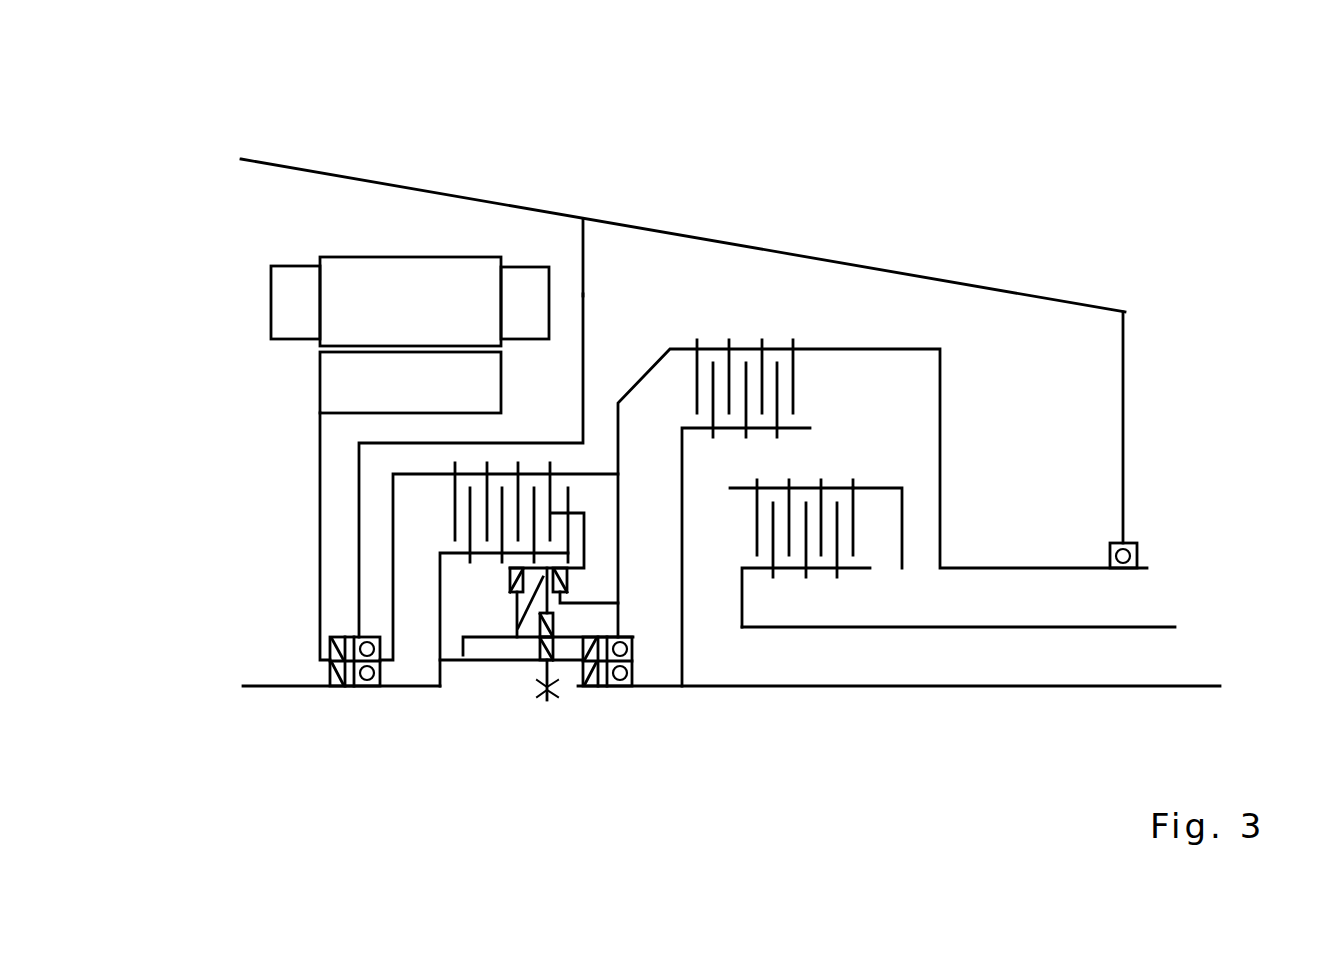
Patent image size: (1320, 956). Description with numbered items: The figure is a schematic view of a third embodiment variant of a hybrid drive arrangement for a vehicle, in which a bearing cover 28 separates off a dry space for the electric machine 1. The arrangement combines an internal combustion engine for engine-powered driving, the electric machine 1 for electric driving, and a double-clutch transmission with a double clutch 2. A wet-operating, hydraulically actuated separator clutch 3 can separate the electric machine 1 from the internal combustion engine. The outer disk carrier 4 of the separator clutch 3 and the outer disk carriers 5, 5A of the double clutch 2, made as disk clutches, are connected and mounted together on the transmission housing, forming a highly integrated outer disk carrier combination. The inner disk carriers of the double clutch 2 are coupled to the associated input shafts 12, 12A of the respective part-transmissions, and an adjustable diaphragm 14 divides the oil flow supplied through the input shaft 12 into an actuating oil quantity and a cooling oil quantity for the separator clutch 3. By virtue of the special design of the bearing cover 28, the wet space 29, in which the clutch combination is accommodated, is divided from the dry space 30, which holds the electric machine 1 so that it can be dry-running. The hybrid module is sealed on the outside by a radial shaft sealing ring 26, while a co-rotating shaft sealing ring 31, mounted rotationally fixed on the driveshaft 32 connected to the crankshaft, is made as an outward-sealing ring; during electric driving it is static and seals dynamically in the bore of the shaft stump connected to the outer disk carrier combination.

The electric machine 1 is at (334, 104).
The double clutch 2 is at (925, 106).
The separator clutch 3 is at (361, 503).
The outer disk carrier 4 is at (433, 376).
The outer disk carrier 5 is at (810, 348).
The outer disk carrier 5A is at (877, 487).
The input shaft 12 is at (1178, 687).
The input shaft 12A is at (1140, 627).
The adjustable diaphragm 14 is at (547, 700).
The radial shaft sealing ring 26 is at (330, 650).
The bearing cover 28 is at (583, 295).
The wet space 29 is at (725, 285).
The dry space 30 is at (523, 238).
The co-rotating shaft sealing ring 31 is at (330, 673).
The driveshaft 32 is at (280, 687).